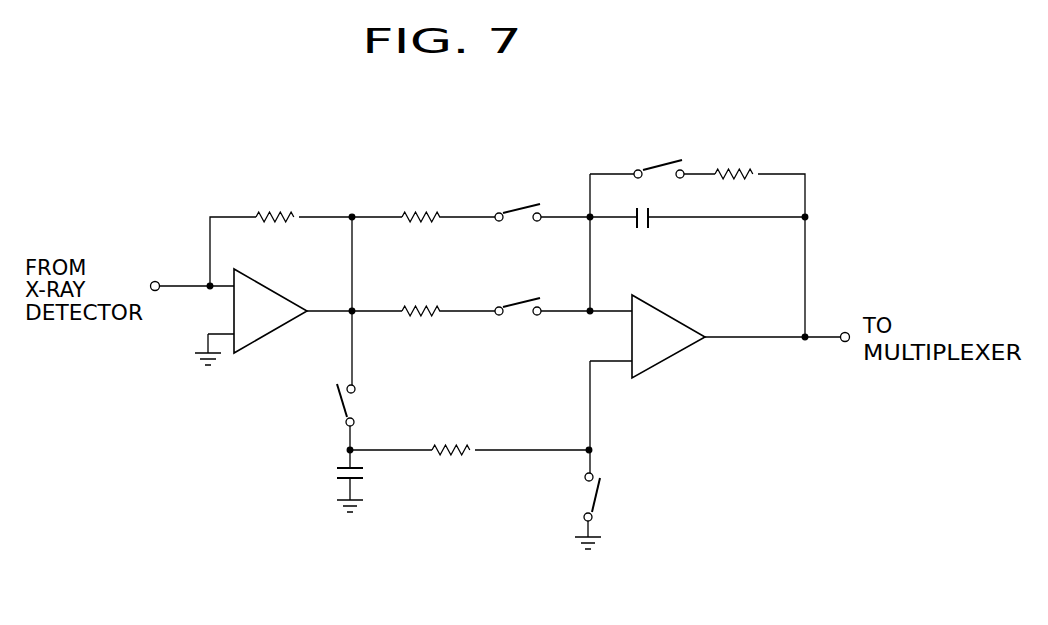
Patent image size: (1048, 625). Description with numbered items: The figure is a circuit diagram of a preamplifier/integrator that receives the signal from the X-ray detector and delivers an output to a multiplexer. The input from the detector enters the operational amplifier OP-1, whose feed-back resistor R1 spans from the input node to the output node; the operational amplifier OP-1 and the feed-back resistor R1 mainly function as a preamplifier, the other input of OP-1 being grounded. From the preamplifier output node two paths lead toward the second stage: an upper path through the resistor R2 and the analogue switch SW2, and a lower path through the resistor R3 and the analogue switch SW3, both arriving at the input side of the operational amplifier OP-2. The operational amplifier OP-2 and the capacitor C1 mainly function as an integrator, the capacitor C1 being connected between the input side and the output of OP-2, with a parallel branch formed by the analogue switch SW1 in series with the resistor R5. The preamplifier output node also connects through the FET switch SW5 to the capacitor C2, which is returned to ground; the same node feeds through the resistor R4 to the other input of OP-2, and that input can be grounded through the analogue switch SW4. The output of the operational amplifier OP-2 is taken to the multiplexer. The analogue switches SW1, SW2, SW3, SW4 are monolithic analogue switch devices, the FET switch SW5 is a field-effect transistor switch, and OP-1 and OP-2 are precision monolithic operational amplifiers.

The feed-back resistor R1 is at (275, 205).
The resistor R2 is at (448, 205).
The resistor R3 is at (448, 299).
The resistor R4 is at (451, 439).
The resistor R5 is at (734, 161).
The analogue switch SW1 is at (660, 159).
The analogue switch SW2 is at (520, 202).
The analogue switch SW3 is at (520, 298).
The analogue switch SW4 is at (616, 497).
The FET switch SW5 is at (371, 405).
The capacitor C1 is at (641, 208).
The capacitor C2 is at (334, 475).
The operational amplifier OP-1 is at (257, 332).
The operational amplifier OP-2 is at (668, 350).